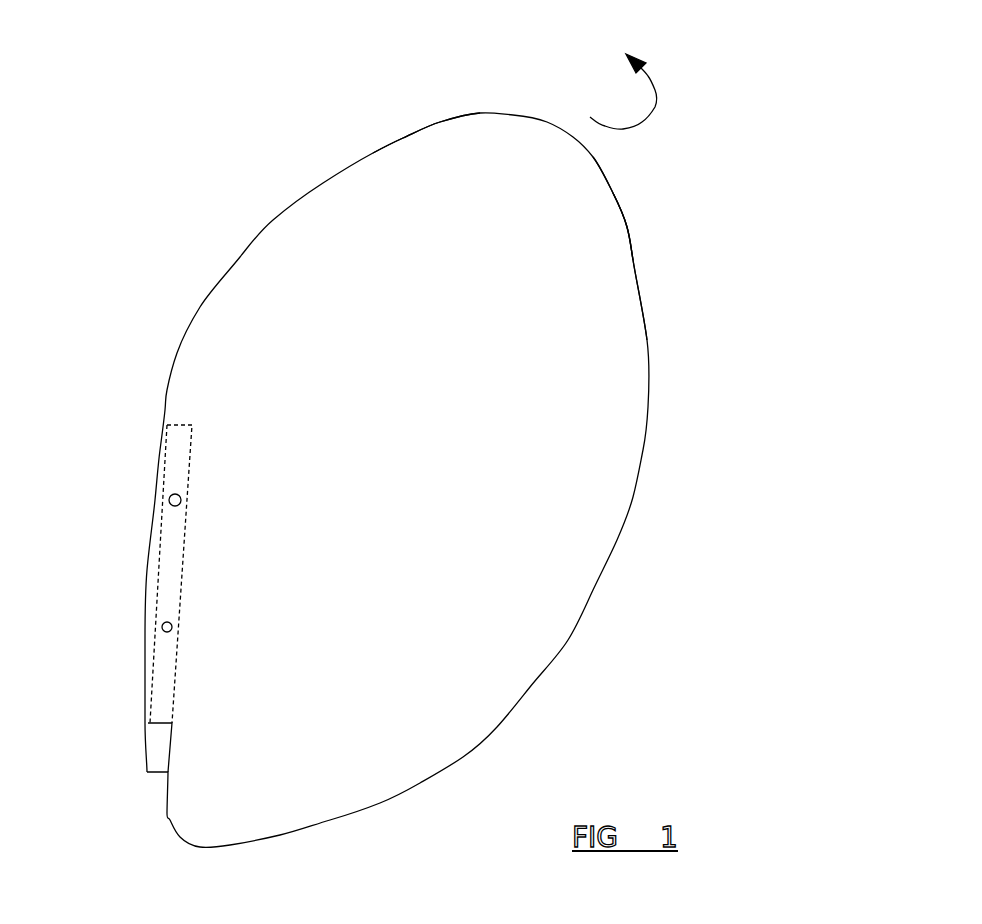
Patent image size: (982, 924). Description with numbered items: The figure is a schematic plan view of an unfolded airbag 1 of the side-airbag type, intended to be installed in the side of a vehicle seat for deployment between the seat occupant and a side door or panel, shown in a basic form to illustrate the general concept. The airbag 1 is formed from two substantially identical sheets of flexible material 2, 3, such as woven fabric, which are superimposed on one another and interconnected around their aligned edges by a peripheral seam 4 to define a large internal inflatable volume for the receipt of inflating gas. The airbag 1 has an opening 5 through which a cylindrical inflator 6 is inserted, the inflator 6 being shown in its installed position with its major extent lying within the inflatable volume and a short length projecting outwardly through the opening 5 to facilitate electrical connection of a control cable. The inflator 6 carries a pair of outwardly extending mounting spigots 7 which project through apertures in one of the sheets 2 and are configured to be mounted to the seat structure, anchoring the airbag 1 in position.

The airbag 1 is at (708, 316).
The sheet of flexible material 2 is at (589, 243).
The sheet of flexible material 3 is at (602, 243).
The peripheral seam 4 is at (403, 138).
The opening 5 is at (165, 722).
The inflator 6 is at (162, 625).
The mounting spigots 7 is at (169, 500).